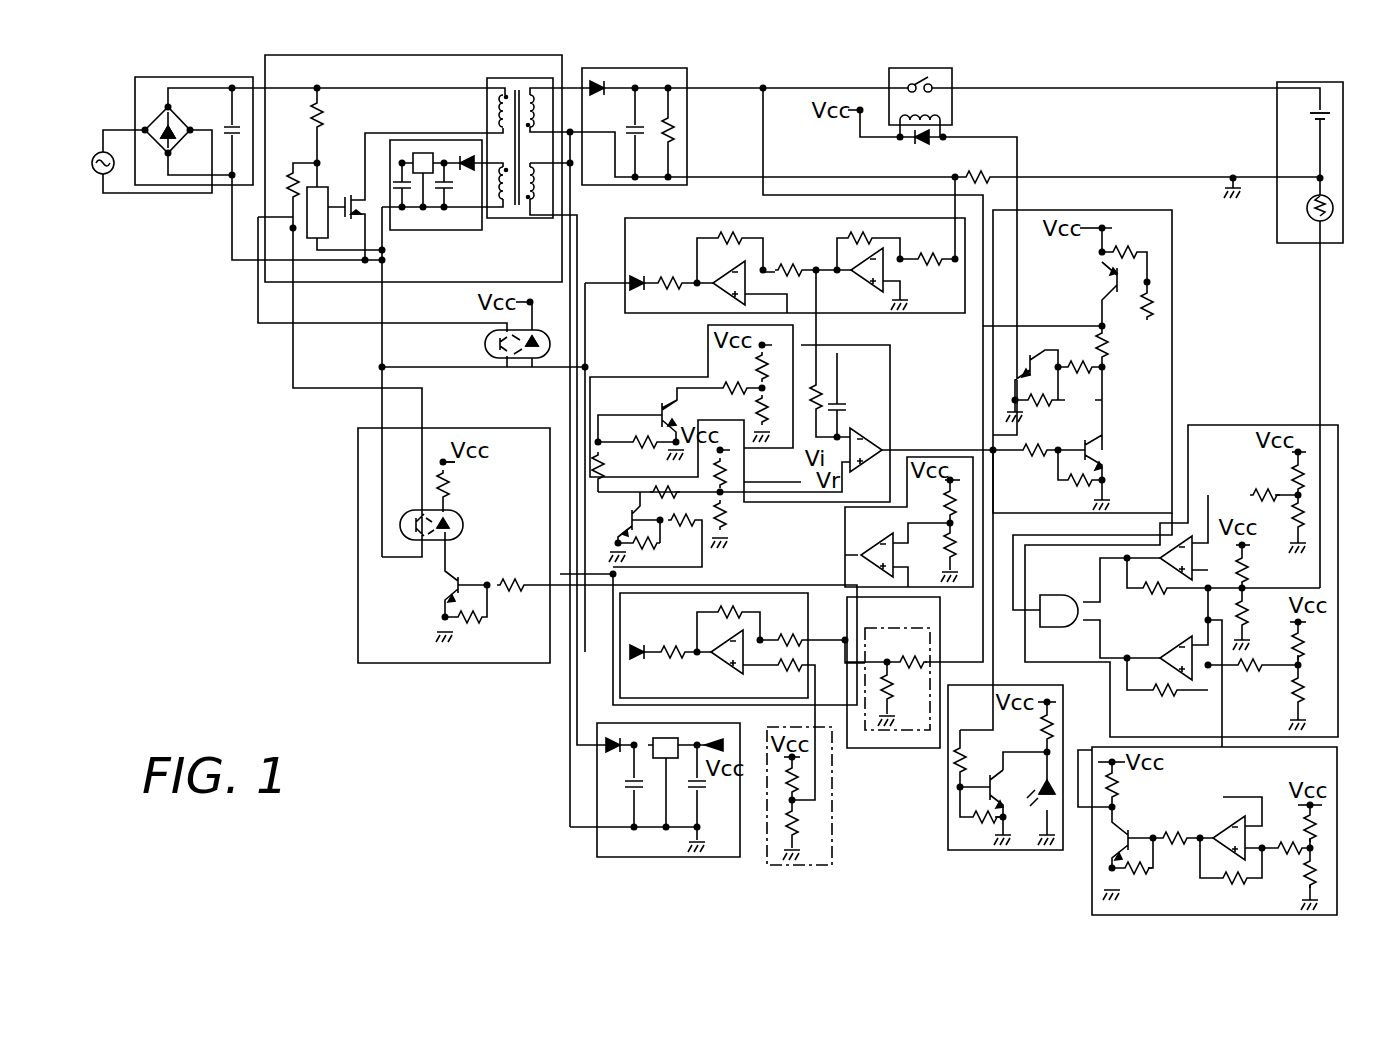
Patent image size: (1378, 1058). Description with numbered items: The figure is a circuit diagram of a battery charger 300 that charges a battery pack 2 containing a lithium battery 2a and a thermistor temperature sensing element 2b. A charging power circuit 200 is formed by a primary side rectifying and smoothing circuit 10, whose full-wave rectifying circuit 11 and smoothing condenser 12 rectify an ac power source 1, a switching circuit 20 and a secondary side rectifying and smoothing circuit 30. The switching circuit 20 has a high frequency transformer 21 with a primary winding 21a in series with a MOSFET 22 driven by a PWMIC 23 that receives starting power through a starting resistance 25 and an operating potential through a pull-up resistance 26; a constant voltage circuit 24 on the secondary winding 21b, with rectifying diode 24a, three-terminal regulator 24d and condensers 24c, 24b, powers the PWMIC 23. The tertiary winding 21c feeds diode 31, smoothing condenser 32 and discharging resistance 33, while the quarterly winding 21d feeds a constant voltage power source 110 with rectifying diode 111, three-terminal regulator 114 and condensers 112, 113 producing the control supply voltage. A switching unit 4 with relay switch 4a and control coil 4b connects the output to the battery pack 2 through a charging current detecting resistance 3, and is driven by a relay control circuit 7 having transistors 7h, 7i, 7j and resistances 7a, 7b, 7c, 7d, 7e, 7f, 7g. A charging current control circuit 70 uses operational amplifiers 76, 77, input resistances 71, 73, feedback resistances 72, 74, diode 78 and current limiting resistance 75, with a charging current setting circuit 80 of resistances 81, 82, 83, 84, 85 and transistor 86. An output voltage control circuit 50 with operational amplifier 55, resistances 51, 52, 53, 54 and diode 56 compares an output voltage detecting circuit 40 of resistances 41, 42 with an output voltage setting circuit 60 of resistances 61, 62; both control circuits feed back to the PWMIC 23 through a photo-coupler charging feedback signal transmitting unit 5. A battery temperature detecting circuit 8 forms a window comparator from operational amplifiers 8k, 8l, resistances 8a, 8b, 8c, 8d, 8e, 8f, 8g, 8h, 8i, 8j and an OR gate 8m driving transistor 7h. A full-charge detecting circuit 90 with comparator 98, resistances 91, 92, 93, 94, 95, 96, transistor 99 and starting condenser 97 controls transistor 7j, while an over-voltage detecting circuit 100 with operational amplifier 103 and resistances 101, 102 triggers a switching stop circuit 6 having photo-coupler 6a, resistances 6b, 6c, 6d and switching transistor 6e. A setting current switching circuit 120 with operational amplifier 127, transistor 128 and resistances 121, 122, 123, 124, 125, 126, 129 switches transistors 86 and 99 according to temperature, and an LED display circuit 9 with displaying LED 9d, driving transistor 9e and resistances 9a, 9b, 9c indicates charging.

The battery charger 300 is at (131, 51).
The ac power source 1 is at (98, 155).
The primary side rectifying and smoothing circuit 10 is at (193, 77).
The full-wave rectifying circuit 11 is at (158, 123).
The smoothing condenser 12 is at (226, 128).
The switching circuit 20 is at (263, 57).
The high frequency transformer 21 is at (487, 80).
The primary winding 21a is at (502, 95).
The secondary winding 21b is at (500, 203).
The tertiary winding 21c is at (530, 95).
The quarterly winding 21d is at (533, 204).
The MOSFET 22 is at (351, 193).
The PWMIC 23 is at (309, 185).
The constant voltage circuit 24 is at (390, 140).
The rectifying diode 24a is at (469, 158).
The condenser 24b is at (404, 201).
The condenser 24c is at (447, 194).
The three-terminal regulator 24d is at (423, 153).
The starting resistance 25 is at (314, 120).
The pull-up resistance 26 is at (295, 170).
The charging power circuit 200 is at (573, 57).
The secondary side rectifying and smoothing circuit 30 is at (692, 68).
The diode 31 is at (597, 100).
The smoothing condenser 32 is at (676, 134).
The discharging resistance 33 is at (650, 130).
The switching unit 4 is at (889, 79).
The relay switch 4a is at (911, 84).
The control coil 4b is at (918, 138).
The charging current detecting resistance 3 is at (986, 175).
The battery pack 2 is at (1277, 82).
The battery 2a is at (1310, 120).
The temperature sensing element 2b is at (1310, 210).
The relay control circuit 7 is at (1100, 210).
The resistance 7a is at (1140, 252).
The resistance 7b is at (1148, 315).
The resistance 7c is at (1103, 344).
The resistance 7d is at (1080, 374).
The resistance 7e is at (1038, 406).
The resistance 7f is at (1030, 458).
The resistance 7g is at (1096, 476).
The transistor 7h is at (1107, 278).
The transistor 7i is at (1030, 365).
The transistor 7j is at (1096, 451).
The charging current control circuit 70 is at (625, 218).
The input resistance 71 is at (930, 257).
The feedback resistance 72 is at (862, 234).
The input resistance 73 is at (790, 266).
The feedback resistance 74 is at (730, 235).
The current limiting resistance 75 is at (669, 279).
The operational amplifier 76 is at (872, 284).
The operational amplifier 77 is at (713, 290).
The diode 78 is at (636, 291).
The charging current setting circuit 80 is at (708, 333).
The voltage dividing resistance 81 is at (774, 380).
The voltage dividing resistance 82 is at (755, 413).
The voltage dividing value adjusting resistance 83 is at (742, 385).
The resistance 84 is at (634, 440).
The resistance 85 is at (606, 445).
The transistor 86 is at (666, 371).
The full-charge detecting circuit 90 is at (890, 365).
The resistance 91 is at (816, 390).
The voltage dividing resistance 92 is at (720, 459).
The voltage dividing resistance 93 is at (720, 509).
The voltage dividing value adjusting resistance 94 is at (660, 492).
The resistance 95 is at (675, 527).
The resistance 96 is at (618, 583).
The condenser 97 is at (838, 414).
The operational amplifier 98 is at (846, 440).
The transistor 99 is at (626, 506).
The over-voltage detecting circuit 100 is at (950, 457).
The voltage dividing resistance 101 is at (937, 488).
The voltage dividing resistance 102 is at (970, 565).
The operational amplifier 103 is at (858, 544).
The charging feedback signal transmitting unit 5 is at (484, 343).
The switching stop circuit 6 is at (358, 457).
The photo-coupler 6a is at (464, 515).
The resistance 6b is at (452, 483).
The resistance 6c is at (510, 584).
The resistance 6d is at (471, 622).
The switching transistor 6e is at (443, 585).
The battery temperature detecting circuit 8 is at (1235, 425).
The voltage dividing resistance 8a is at (1296, 479).
The voltage dividing resistance 8b is at (1303, 515).
The input resistance 8c is at (1250, 495).
The voltage dividing resistance 8d is at (1298, 650).
The voltage dividing resistance 8e is at (1295, 692).
The input resistance 8f is at (1250, 675).
The resistance 8g is at (1245, 567).
The resistance 8h is at (1244, 611).
The feedback resistance 8i is at (1150, 598).
The feedback resistance 8j is at (1160, 693).
The operational amplifier 8k is at (1168, 567).
The operational amplifier 8l is at (1165, 665).
The OR gate 8m is at (1070, 593).
The LED display circuit 9 is at (1007, 685).
The resistance 9a is at (1045, 737).
The resistance 9b is at (963, 765).
The resistance 9c is at (980, 832).
The displaying LED 9d is at (1045, 817).
The driving transistor 9e is at (1005, 788).
The output voltage control circuit 50 is at (785, 594).
The input resistance 51 is at (778, 637).
The input resistance 52 is at (780, 668).
The feedback resistance 53 is at (745, 606).
The current limiting resistance 54 is at (660, 646).
The operational amplifier 55 is at (718, 661).
The diode 56 is at (640, 656).
The output voltage detecting circuit 40 is at (863, 745).
The resistance 41 is at (911, 653).
The resistance 42 is at (908, 722).
The output voltage setting circuit 60 is at (833, 835).
The voltage dividing resistance 61 is at (793, 795).
The voltage dividing resistance 62 is at (785, 852).
The constant voltage power source for the control circuit 110 is at (607, 857).
The rectifying diode 111 is at (607, 750).
The condenser 112 is at (641, 793).
The condenser 113 is at (704, 787).
The three-terminal regulator 114 is at (675, 763).
The setting current switching circuit 120 is at (1092, 907).
The resistance 121 is at (1310, 817).
The resistance 122 is at (1305, 870).
The resistance 123 is at (1305, 838).
The resistance 124 is at (1230, 880).
The resistance 125 is at (1173, 836).
The resistance 126 is at (1145, 870).
The operational amplifier 127 is at (1224, 832).
The transistor 128 is at (1090, 860).
The resistance 129 is at (1115, 780).